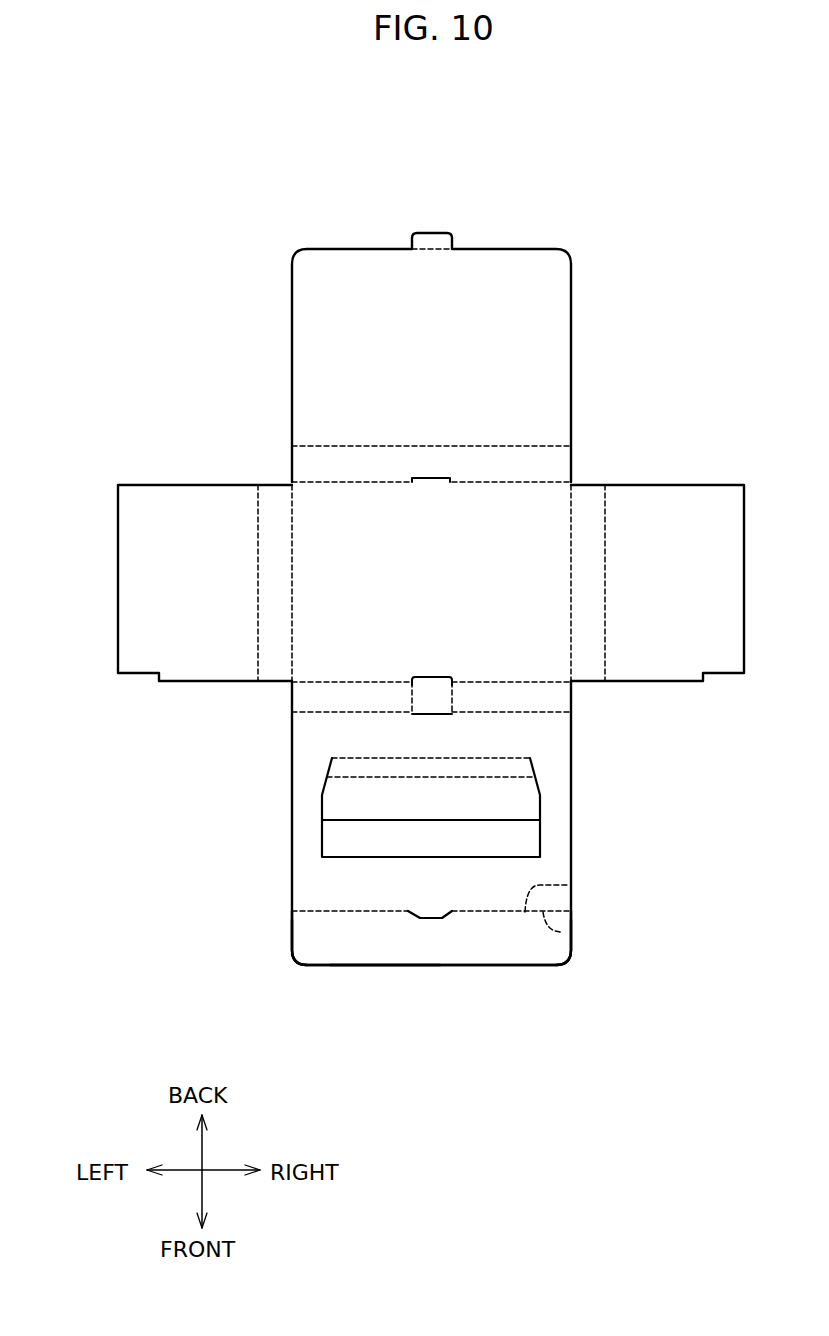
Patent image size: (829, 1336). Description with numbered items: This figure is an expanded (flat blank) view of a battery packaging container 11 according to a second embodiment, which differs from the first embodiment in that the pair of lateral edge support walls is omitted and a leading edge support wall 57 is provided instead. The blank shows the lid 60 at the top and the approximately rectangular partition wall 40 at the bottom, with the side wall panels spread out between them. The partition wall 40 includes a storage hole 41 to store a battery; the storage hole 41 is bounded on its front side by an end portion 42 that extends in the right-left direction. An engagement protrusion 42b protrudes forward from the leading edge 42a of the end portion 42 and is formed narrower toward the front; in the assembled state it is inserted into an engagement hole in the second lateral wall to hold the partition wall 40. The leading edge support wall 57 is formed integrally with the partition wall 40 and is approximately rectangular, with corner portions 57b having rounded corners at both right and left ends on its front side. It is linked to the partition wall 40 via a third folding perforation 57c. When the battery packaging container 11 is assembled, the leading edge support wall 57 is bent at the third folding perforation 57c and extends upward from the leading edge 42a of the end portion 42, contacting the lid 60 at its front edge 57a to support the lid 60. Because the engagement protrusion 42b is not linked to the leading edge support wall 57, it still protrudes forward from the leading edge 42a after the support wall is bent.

The battery packaging container 11 is at (246, 185).
The lid 60 is at (552, 289).
The partition wall 40 is at (558, 747).
The storage hole 41 is at (523, 842).
The end portion 42 is at (368, 892).
The leading edge 42a is at (567, 885).
The engagement protrusion 42b is at (428, 917).
The leading edge support wall 57 is at (472, 994).
The front edge 57a is at (353, 966).
The corner portions 57b is at (293, 953).
The third folding perforation 57c is at (562, 932).